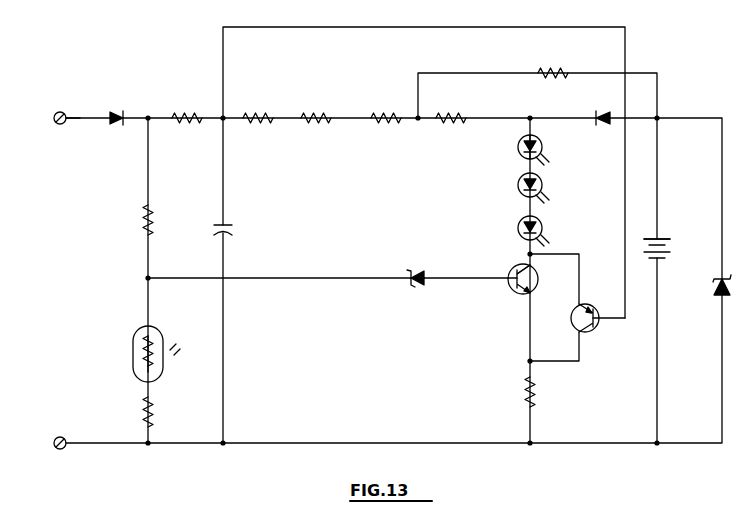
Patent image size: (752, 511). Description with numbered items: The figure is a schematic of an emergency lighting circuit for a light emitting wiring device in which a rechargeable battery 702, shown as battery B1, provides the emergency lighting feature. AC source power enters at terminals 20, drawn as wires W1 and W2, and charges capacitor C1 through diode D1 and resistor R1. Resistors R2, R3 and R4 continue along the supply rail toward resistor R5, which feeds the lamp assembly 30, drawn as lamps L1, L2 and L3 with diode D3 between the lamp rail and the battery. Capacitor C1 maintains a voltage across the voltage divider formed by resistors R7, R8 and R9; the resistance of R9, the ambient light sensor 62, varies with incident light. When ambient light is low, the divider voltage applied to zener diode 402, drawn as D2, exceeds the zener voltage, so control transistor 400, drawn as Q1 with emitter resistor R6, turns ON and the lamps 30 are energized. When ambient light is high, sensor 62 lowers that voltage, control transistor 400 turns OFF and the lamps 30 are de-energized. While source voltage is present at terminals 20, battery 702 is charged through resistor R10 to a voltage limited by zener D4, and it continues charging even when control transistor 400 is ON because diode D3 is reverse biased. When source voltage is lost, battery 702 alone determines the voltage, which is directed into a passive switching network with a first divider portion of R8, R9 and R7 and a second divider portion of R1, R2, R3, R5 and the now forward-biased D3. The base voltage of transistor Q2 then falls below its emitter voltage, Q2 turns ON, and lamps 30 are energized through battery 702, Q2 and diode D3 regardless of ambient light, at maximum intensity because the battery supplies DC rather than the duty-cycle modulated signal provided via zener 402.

The terminals 20 is at (56, 110).
The lamp assembly 30 is at (518, 147).
The sensor 62 is at (140, 330).
The control transistor 400 is at (516, 295).
The zener diode 402 is at (416, 267).
The rechargeable battery 702 is at (660, 238).
The wire 1 W1 is at (83, 107).
The wire 2 W2 is at (56, 435).
The diode D1 is at (117, 134).
The zener diode D2 is at (416, 296).
The diode D3 is at (601, 134).
The zener D4 is at (709, 286).
The resistor R1 is at (187, 107).
The resistor R2 is at (258, 107).
The resistor R3 is at (316, 107).
The resistor R4 is at (386, 107).
The resistor R5 is at (451, 107).
The resistor R6 is at (544, 392).
The resistor R7 is at (162, 220).
The resistor R8 is at (162, 412).
The resistor R9 is at (127, 354).
The resistor R10 is at (554, 60).
The capacitor C1 is at (236, 230).
The LED L1 is at (518, 228).
The LED L2 is at (518, 185).
The LED L3 is at (550, 147).
The transistor Q1 is at (506, 266).
The transistor Q2 is at (592, 331).
The battery B1 is at (670, 250).